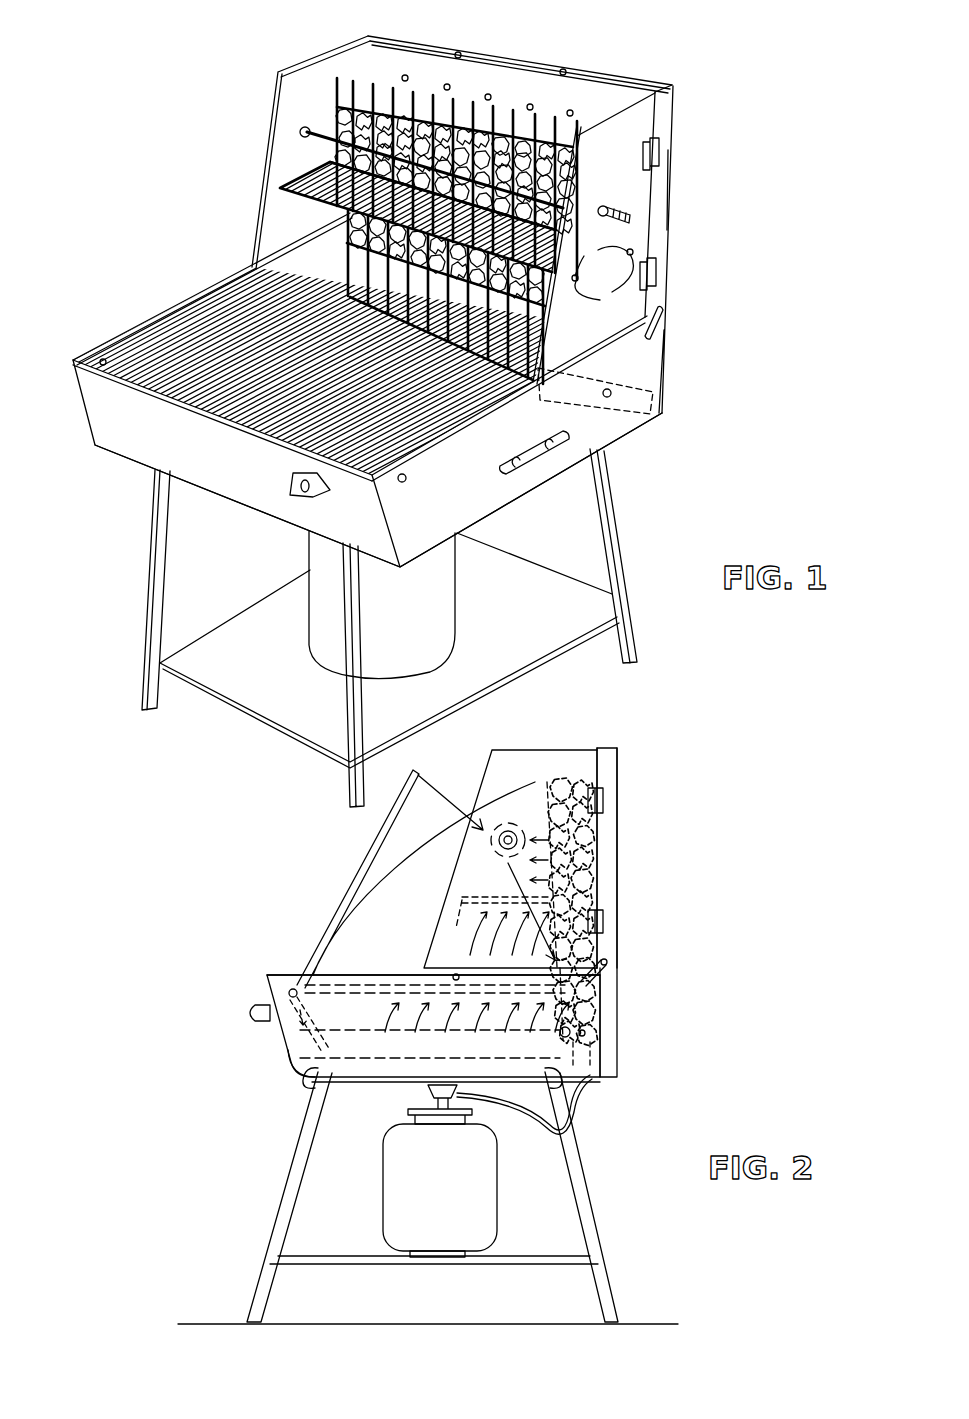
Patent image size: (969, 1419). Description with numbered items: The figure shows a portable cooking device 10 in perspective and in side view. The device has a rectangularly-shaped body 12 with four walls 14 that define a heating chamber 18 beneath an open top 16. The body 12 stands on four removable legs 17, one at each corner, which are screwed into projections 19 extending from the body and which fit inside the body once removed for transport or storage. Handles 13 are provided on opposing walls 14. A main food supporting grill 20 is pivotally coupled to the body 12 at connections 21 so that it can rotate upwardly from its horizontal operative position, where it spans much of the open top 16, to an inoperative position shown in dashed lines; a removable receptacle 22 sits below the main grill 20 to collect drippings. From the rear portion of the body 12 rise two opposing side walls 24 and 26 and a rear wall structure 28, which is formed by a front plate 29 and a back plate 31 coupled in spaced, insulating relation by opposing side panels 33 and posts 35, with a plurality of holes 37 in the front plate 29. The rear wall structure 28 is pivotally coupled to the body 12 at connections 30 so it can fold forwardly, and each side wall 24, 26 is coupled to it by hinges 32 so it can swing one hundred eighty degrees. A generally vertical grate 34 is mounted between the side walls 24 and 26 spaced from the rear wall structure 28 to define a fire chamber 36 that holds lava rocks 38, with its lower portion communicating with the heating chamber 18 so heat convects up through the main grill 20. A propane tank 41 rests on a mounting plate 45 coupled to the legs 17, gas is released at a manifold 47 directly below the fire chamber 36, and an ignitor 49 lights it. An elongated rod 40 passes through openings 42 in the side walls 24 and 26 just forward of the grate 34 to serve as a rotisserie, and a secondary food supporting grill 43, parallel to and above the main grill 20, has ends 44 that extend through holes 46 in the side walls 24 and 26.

In FIG. 1, the portable cooking device 10 is at (734, 203).
In FIG. 1, the body 12 is at (515, 511).
In FIG. 2, the body 12 is at (609, 1083).
In FIG. 1, the handles 13 is at (537, 452).
In FIG. 1, the walls 14 is at (128, 328).
In FIG. 2, the walls 14 is at (620, 1032).
In FIG. 1, the open top 16 is at (197, 305).
In FIG. 2, the open top 16 is at (382, 972).
In FIG. 1, the legs 17 is at (140, 700).
In FIG. 2, the legs 17 is at (277, 1225).
In FIG. 2, the heating chamber 18 is at (284, 1070).
In FIG. 2, the projections 19 is at (320, 1086).
In FIG. 1, the main food supporting grill 20 is at (287, 428).
In FIG. 2, the main food supporting grill 20 is at (372, 848).
In FIG. 1, the connections 21 is at (98, 364).
In FIG. 2, the connections 21 is at (290, 988).
In FIG. 2, the removable receptacle 22 is at (367, 1063).
In FIG. 1, the side wall 24 is at (639, 310).
In FIG. 2, the side wall 24 is at (582, 752).
In FIG. 1, the side wall 26 is at (302, 73).
In FIG. 1, the rear wall structure 28 is at (669, 243).
In FIG. 2, the rear wall structure 28 is at (620, 857).
In FIG. 1, the front plate 29 is at (417, 62).
In FIG. 1, the connections 30 is at (665, 328).
In FIG. 2, the connections 30 is at (607, 977).
In FIG. 1, the back plate 31 is at (654, 84).
In FIG. 1, the hinges 32 is at (661, 152).
In FIG. 2, the hinges 32 is at (605, 795).
In FIG. 1, the side panels 33 is at (668, 190).
In FIG. 1, the grate 34 is at (453, 97).
In FIG. 2, the grate 34 is at (545, 785).
In FIG. 1, the posts 35 is at (565, 70).
In FIG. 1, the fire chamber 36 is at (548, 120).
In FIG. 2, the fire chamber 36 is at (614, 828).
In FIG. 1, the holes 37 is at (449, 84).
In FIG. 1, the lava rocks 38 is at (488, 150).
In FIG. 2, the lava rocks 38 is at (556, 888).
In FIG. 1, the elongated rod 40 is at (300, 135).
In FIG. 2, the elongated rod 40 is at (498, 846).
In FIG. 1, the propane tank 41 is at (452, 613).
In FIG. 2, the propane tank 41 is at (498, 1200).
In FIG. 1, the openings 42 is at (604, 206).
In FIG. 1, the secondary food supporting grill 43 is at (284, 196).
In FIG. 2, the secondary food supporting grill 43 is at (477, 964).
In FIG. 1, the ends 44 is at (598, 250).
In FIG. 1, the mounting plate 45 is at (520, 655).
In FIG. 2, the mounting plate 45 is at (511, 1266).
In FIG. 1, the holes 46 is at (604, 296).
In FIG. 1, the manifold 47 is at (633, 410).
In FIG. 2, the manifold 47 is at (592, 1078).
In FIG. 1, the ignitor 49 is at (324, 509).
In FIG. 2, the ignitor 49 is at (254, 1011).